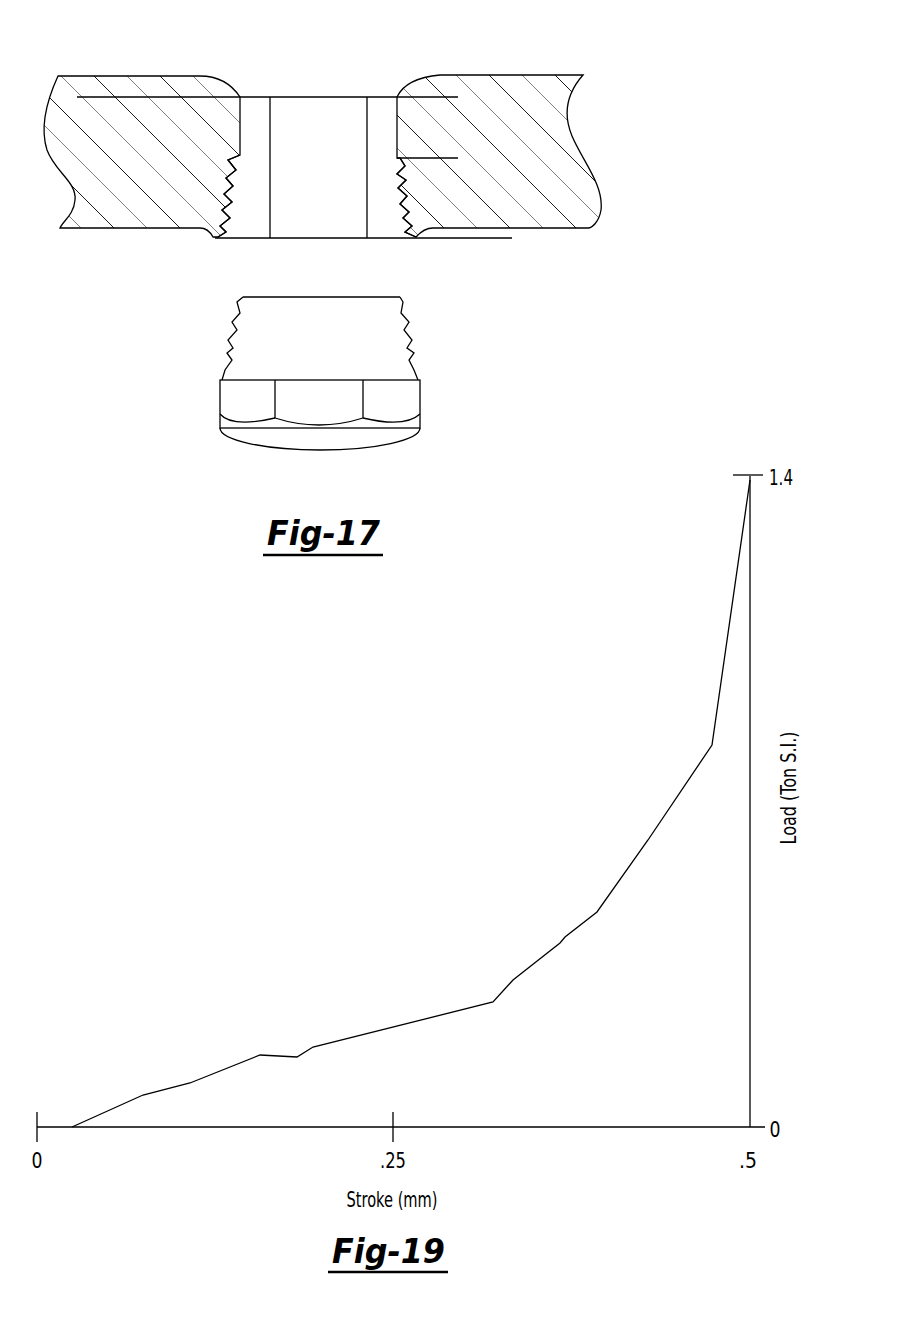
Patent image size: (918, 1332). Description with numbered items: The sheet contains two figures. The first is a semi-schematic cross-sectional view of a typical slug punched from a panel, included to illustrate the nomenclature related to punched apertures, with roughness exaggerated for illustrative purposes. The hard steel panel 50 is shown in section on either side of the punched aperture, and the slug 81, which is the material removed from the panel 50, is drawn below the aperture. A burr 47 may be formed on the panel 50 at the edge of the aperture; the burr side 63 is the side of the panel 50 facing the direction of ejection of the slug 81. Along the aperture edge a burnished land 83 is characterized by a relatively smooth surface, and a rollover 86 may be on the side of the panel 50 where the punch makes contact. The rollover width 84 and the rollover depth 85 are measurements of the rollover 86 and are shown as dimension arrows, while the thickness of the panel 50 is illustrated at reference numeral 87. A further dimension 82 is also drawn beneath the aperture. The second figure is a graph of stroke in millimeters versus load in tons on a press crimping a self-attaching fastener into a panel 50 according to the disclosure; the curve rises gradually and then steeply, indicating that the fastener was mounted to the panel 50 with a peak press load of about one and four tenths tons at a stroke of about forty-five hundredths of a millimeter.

The burr 47 is at (210, 238).
The hard steel panel 50 is at (578, 195).
The burr side 63 is at (130, 230).
The slug 81 is at (420, 412).
The thread relief dimension 82 is at (466, 190).
The burnished land 83 is at (430, 97).
The rollover width 84 is at (190, 37).
The rollover depth 85 is at (109, 130).
The rollover 86 is at (287, 47).
The thickness of the panel 87 is at (543, 228).